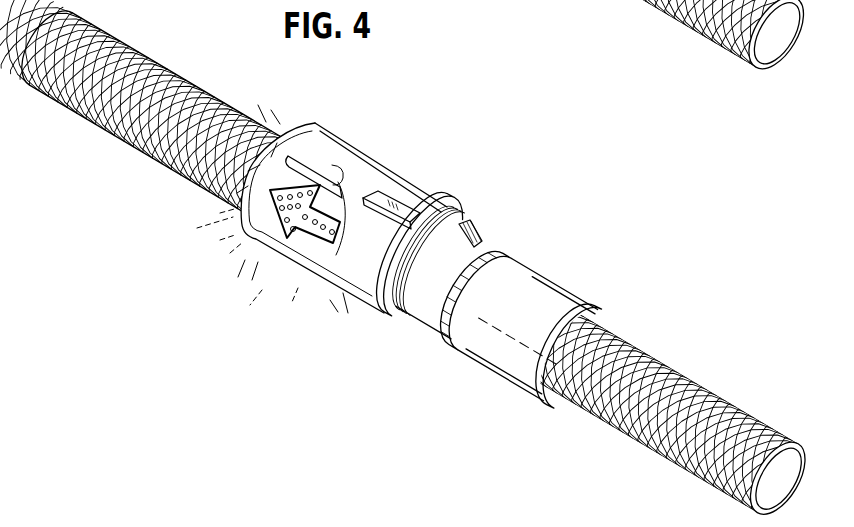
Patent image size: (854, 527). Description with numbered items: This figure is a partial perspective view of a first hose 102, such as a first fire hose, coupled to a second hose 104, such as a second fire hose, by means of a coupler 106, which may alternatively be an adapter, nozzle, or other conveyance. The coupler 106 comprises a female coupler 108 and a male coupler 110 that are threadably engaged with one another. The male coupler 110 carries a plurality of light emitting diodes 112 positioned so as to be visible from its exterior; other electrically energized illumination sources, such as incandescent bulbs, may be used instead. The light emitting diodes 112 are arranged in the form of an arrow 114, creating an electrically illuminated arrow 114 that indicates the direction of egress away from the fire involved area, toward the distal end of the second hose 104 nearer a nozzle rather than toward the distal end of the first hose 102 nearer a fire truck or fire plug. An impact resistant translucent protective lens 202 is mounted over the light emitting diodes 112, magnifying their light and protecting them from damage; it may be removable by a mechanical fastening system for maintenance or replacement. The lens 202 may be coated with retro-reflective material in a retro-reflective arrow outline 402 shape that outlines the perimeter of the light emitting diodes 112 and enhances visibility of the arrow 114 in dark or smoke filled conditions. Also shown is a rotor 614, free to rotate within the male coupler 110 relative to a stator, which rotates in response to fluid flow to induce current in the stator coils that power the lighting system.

The first hose 102 is at (199, 86).
The second hose 104 is at (690, 383).
The coupler 106 is at (623, 292).
The female coupler 108 is at (482, 369).
The male coupler 110 is at (286, 239).
The light emitting diodes 112 is at (322, 237).
The arrow 114 is at (331, 182).
The impact resistant translucent protective lens 202 is at (283, 135).
The retro-reflective arrow outline 402 is at (233, 230).
The rotor 614 is at (398, 166).